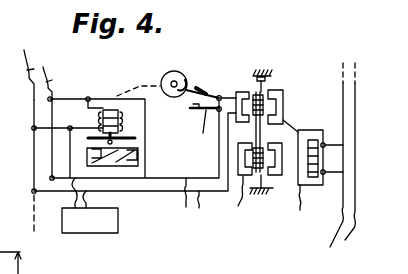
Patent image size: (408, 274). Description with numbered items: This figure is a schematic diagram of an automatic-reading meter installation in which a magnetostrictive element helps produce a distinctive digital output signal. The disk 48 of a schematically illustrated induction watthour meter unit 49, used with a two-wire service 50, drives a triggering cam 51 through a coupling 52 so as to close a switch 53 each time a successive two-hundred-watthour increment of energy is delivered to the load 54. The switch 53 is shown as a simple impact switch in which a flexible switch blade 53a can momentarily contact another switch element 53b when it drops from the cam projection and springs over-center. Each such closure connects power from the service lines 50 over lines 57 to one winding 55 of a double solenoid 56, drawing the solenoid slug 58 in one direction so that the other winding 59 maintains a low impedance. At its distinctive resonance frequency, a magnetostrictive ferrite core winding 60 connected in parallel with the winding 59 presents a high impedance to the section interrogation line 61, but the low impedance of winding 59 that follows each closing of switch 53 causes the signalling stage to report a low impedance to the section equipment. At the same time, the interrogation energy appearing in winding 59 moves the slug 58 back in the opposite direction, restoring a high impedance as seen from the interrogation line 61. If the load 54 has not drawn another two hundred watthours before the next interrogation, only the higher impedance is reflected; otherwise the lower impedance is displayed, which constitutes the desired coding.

The disk 48 is at (137, 142).
The induction watthour meter unit 49 is at (106, 97).
The 2-wire service 50 is at (30, 48).
The triggering cam 51 is at (176, 70).
The coupling 52 is at (131, 88).
The switch 53 is at (208, 157).
The flexible switch blade 53a is at (216, 95).
The switch element 53b is at (192, 110).
The load 54 is at (118, 222).
The winding 55 is at (272, 95).
The double solenoid 56 is at (270, 66).
The lines 57 is at (192, 211).
The solenoid slug 58 is at (272, 124).
The winding 59 is at (255, 185).
The magnetostrictive ferrite core winding 60 is at (296, 208).
The section interrogation line 61 is at (333, 246).